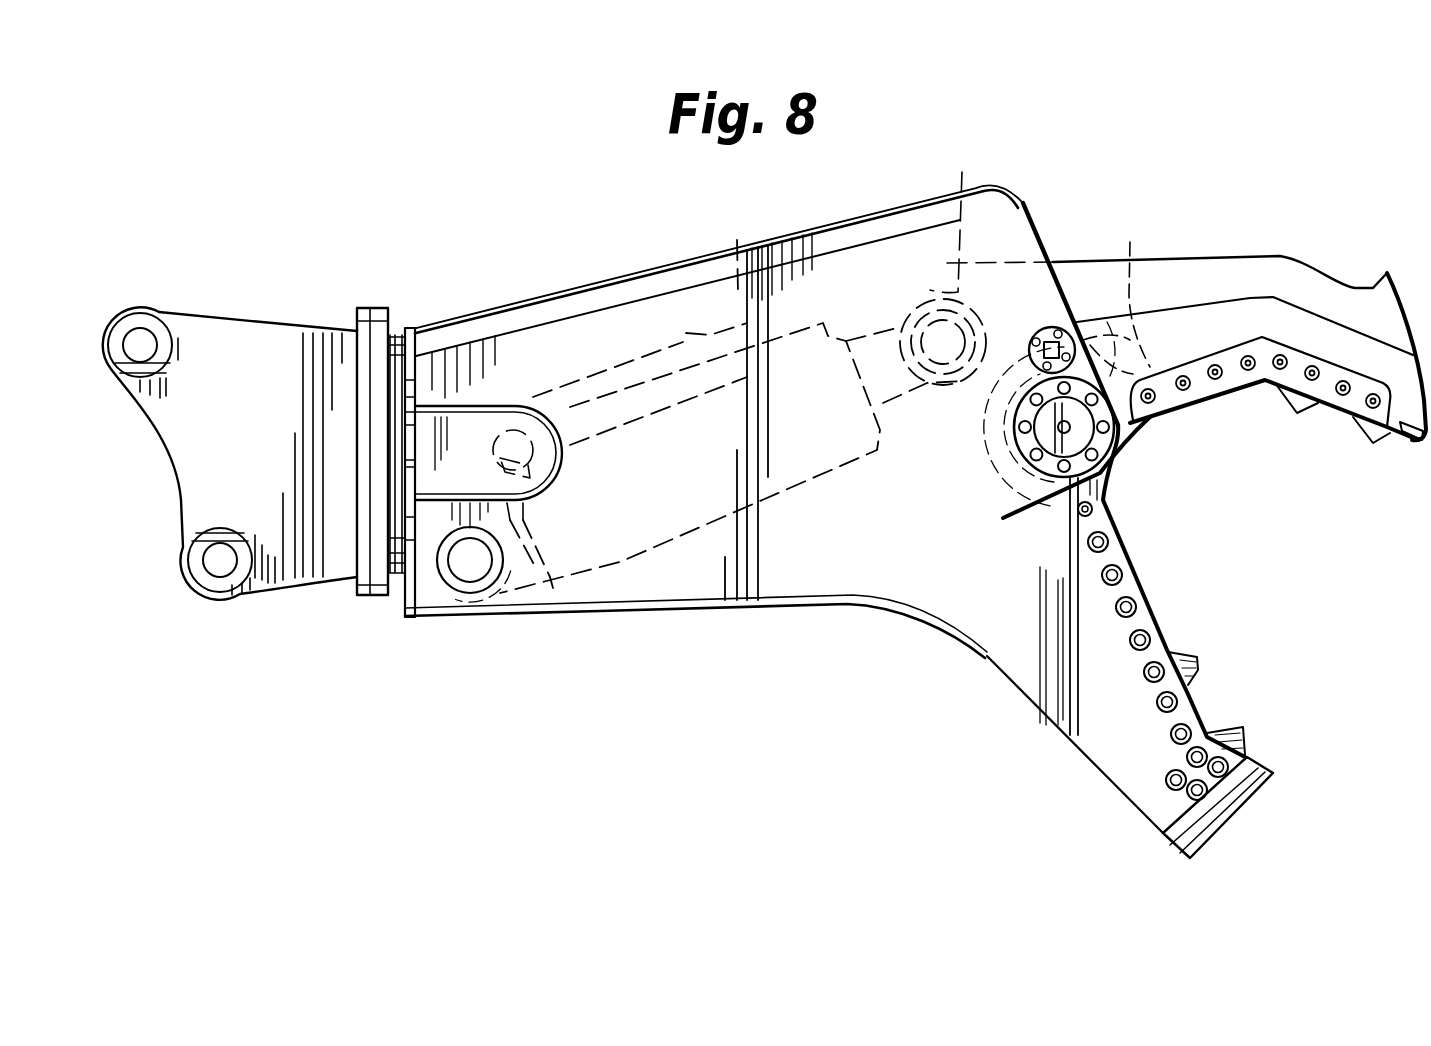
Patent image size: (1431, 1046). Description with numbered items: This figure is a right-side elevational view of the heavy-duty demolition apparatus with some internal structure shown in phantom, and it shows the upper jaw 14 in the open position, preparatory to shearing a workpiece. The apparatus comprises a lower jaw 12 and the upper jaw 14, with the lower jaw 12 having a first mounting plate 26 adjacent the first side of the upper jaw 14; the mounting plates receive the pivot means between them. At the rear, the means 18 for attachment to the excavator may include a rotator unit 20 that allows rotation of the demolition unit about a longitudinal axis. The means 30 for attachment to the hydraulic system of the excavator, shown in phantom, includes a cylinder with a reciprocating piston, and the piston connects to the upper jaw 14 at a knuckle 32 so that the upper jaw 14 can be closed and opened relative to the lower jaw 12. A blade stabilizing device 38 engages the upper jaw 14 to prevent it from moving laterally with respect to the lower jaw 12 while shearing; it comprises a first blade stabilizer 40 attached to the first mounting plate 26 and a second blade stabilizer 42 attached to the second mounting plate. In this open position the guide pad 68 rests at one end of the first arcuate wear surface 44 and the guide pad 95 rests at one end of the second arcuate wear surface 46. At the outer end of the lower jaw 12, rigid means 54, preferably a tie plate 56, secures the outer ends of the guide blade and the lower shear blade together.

The lower jaw 12 is at (1110, 778).
The upper jaw 14 is at (1327, 277).
The means for attachment to the excavator 18 is at (267, 325).
The rotator unit 20 is at (373, 308).
The first mounting plate 26 is at (865, 265).
The means for attachment to the hydraulic system 30 is at (737, 240).
The knuckle 32 is at (963, 184).
The blade stabilizing device 38 is at (1043, 325).
The first blade stabilizer 40 is at (1107, 276).
The second blade stabilizer 42 is at (1145, 426).
The first arcuate wear surface 44 is at (1118, 511).
The second arcuate wear surface 46 is at (1128, 262).
The rigid means 54 is at (1233, 810).
The tie plate 56 is at (1263, 810).
The guide pad 68 is at (1134, 281).
The guide pad 95 is at (1187, 427).